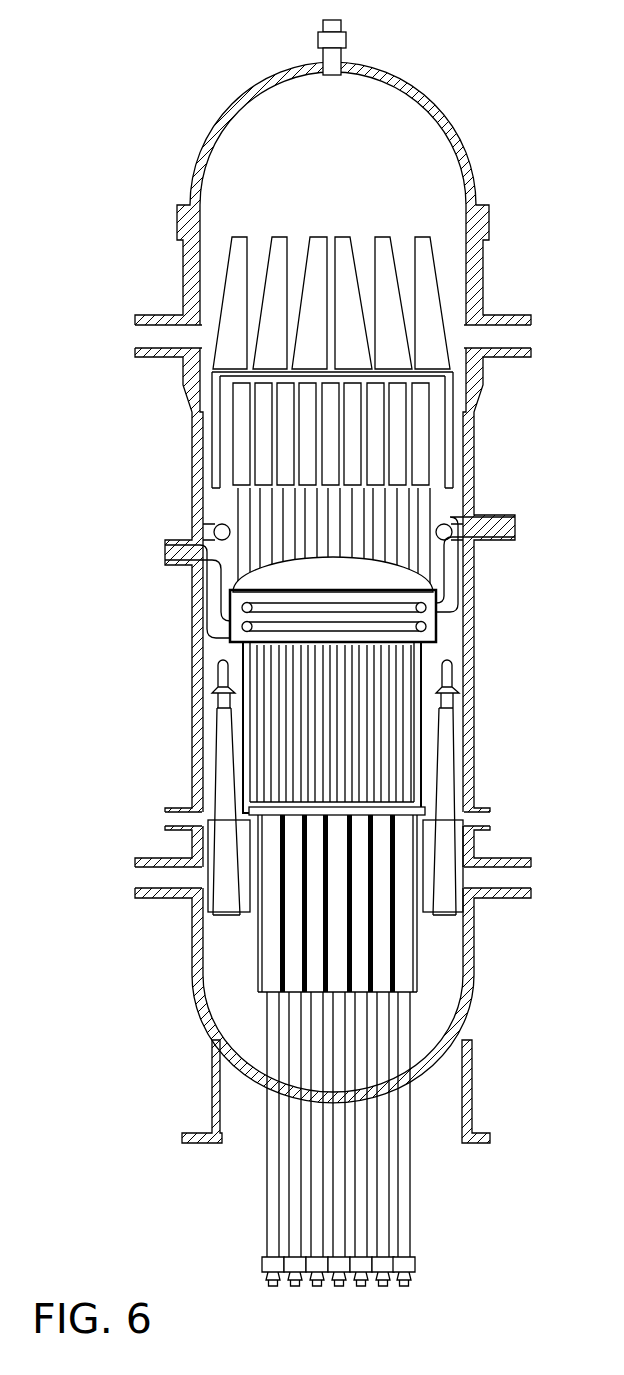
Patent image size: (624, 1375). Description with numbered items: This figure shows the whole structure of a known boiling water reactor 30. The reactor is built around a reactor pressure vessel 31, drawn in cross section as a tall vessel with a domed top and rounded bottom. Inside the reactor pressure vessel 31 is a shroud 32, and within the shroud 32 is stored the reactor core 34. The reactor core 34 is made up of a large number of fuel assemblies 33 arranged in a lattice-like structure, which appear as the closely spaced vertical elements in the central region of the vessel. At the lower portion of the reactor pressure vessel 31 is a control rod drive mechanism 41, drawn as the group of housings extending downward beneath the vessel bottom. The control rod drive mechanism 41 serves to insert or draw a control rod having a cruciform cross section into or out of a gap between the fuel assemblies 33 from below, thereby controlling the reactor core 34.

The boiling water reactor 30 is at (545, 97).
The reactor pressure vessel 31 is at (475, 642).
The shroud 32 is at (430, 720).
The fuel assemblies 33 is at (235, 652).
The reactor core 34 is at (270, 728).
The control rod drive mechanism 41 is at (405, 1108).